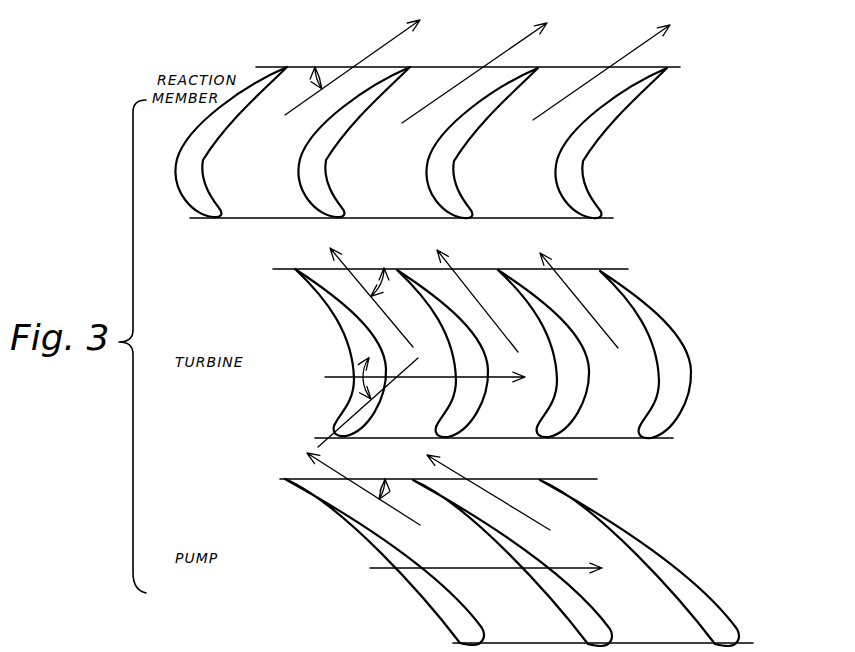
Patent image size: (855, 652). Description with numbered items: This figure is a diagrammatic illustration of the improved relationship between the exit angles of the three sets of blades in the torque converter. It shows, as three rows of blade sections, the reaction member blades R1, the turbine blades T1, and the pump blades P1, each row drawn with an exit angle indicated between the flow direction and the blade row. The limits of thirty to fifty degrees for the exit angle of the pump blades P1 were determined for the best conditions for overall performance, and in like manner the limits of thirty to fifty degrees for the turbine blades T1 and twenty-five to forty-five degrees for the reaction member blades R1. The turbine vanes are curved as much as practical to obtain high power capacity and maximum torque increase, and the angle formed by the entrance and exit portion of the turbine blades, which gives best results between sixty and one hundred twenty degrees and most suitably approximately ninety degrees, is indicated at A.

The reaction member blades R1 is at (452, 157).
The turbine blades T1 is at (578, 368).
The pump blades P1 is at (582, 598).
The angle formed by the entrance and exit portion of the turbine blades A is at (360, 378).